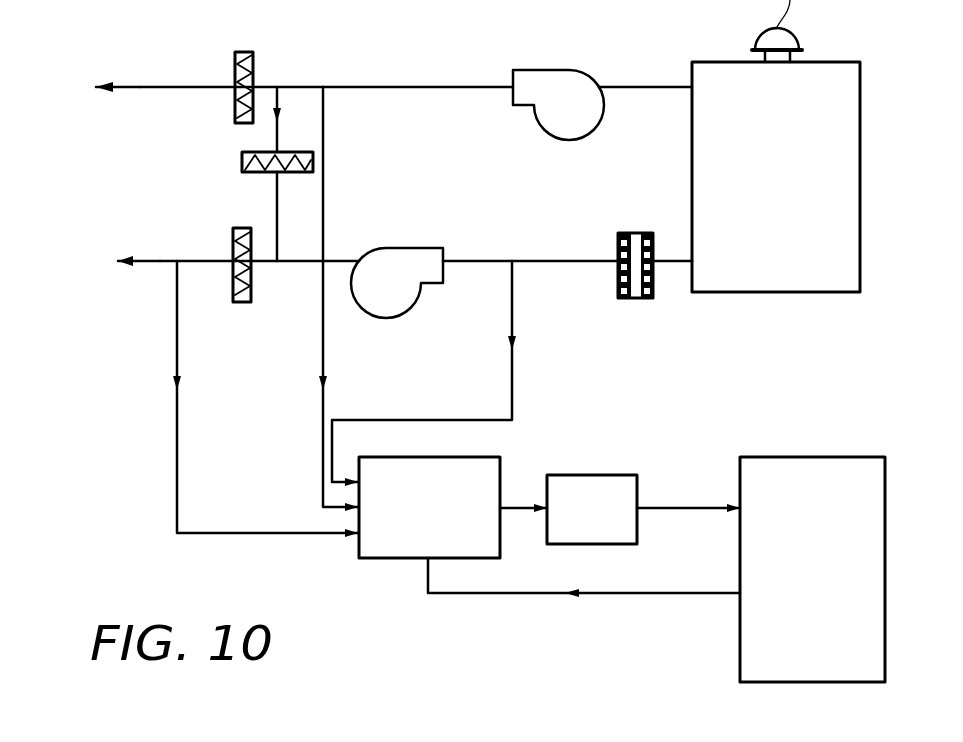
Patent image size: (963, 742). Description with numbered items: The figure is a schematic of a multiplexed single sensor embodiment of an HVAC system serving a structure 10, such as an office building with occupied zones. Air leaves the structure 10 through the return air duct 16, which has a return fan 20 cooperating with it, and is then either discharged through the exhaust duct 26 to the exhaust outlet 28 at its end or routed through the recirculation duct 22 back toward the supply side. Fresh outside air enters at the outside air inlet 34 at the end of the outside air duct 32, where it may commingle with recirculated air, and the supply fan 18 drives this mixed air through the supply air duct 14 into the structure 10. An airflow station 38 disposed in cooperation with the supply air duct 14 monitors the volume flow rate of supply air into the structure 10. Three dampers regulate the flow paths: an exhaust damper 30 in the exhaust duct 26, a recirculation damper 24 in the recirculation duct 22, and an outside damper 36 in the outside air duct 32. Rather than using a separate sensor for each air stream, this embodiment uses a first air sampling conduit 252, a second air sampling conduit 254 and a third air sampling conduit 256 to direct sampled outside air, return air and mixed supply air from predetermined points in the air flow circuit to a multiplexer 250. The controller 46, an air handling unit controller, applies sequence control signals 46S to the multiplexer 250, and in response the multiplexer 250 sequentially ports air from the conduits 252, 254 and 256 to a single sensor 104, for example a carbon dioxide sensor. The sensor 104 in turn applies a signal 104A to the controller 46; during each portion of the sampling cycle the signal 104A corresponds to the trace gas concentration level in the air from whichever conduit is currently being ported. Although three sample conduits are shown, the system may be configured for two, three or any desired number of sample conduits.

The structure 10 is at (830, 61).
The supply air duct 14 is at (537, 264).
The return air duct 16 is at (620, 86).
The supply fan 18 is at (388, 318).
The return fan 20 is at (541, 70).
The recirculation duct 22 is at (277, 216).
The recirculation damper 24 is at (242, 157).
The exhaust duct 26 is at (137, 86).
The exhaust outlet 28 is at (107, 85).
The exhaust damper 30 is at (236, 54).
The outside air duct 32 is at (148, 260).
The outside air inlet 34 is at (121, 260).
The outside damper 36 is at (233, 232).
The airflow station 38 is at (647, 299).
The controller 46 is at (852, 457).
The sequence control signals 46S is at (483, 594).
The sensor 104 is at (612, 475).
The signal 104A is at (726, 507).
The multiplexer 250 is at (400, 559).
The first air sampling conduit 252 is at (176, 352).
The second air sampling conduit 254 is at (383, 86).
The third air sampling conduit 256 is at (512, 268).